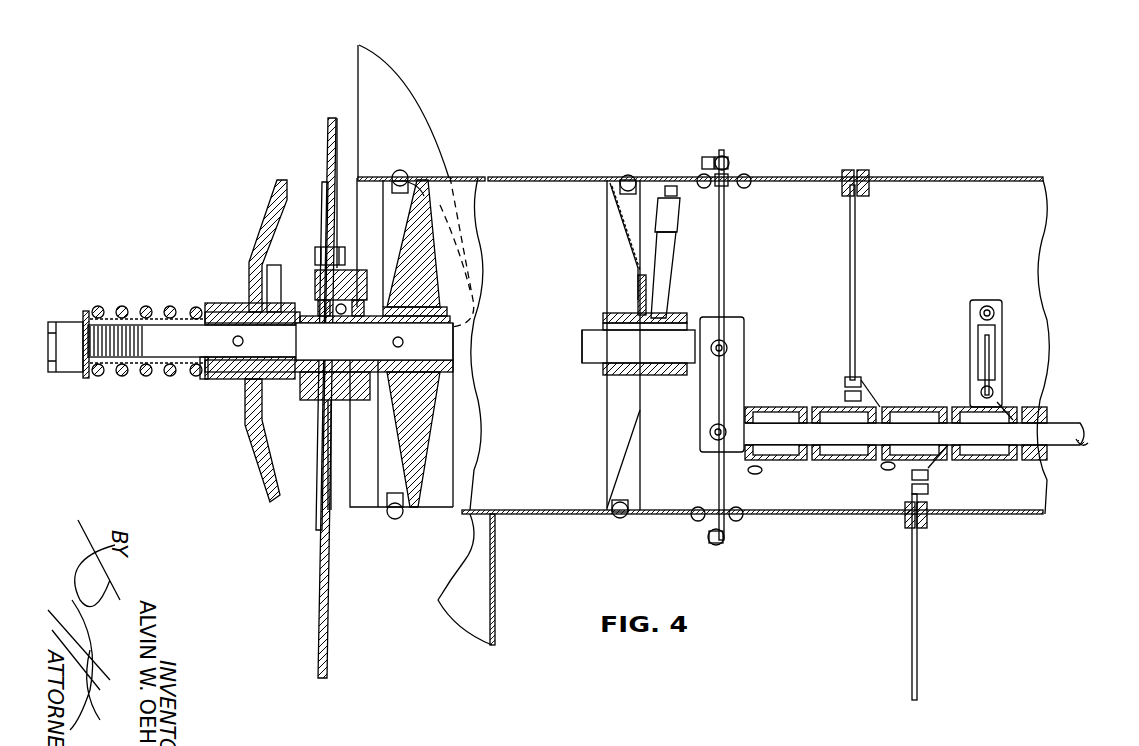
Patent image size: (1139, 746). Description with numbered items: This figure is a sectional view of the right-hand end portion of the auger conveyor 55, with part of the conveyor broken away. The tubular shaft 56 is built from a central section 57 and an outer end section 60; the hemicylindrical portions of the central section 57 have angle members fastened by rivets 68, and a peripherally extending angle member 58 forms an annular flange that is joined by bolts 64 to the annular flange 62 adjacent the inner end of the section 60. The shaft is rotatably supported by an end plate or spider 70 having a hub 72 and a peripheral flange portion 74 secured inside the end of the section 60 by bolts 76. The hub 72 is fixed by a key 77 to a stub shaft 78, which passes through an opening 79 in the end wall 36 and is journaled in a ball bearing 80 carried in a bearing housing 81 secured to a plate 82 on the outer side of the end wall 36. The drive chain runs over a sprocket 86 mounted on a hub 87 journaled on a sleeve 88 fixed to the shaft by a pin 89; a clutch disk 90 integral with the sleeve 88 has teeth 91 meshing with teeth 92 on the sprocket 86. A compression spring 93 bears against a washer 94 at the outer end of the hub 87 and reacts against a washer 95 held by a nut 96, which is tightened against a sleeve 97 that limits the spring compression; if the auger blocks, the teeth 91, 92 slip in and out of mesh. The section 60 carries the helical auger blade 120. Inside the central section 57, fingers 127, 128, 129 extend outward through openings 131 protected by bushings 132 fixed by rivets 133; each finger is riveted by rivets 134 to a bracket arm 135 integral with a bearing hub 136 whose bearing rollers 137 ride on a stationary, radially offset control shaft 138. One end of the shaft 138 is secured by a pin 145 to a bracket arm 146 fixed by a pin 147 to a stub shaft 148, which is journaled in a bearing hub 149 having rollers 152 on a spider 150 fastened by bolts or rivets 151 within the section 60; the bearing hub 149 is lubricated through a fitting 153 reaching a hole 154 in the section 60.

The end wall 36 is at (327, 598).
The auger conveyor 55 is at (328, 91).
The tubular shaft 56 is at (530, 175).
The central section 57 is at (930, 180).
The peripherally extending angle member 58 is at (727, 158).
The outer end section 60 is at (585, 178).
The annular flange 62 is at (718, 156).
The bolt 64 is at (708, 160).
The rivet 68 is at (750, 462).
The end plate or spider 70 is at (430, 448).
The hub 72 is at (466, 300).
The peripheral flange portion 74 is at (382, 500).
The bolt 76 is at (396, 520).
The key 77 is at (468, 328).
The stub shaft 78 is at (438, 372).
The opening 79 is at (332, 444).
The ball bearing 80 is at (348, 364).
The bearing housing 81 is at (340, 402).
The plate 82 is at (316, 510).
The sprocket 86 is at (270, 222).
The hub 87 is at (222, 304).
The sleeve 88 is at (222, 356).
The pin 89 is at (244, 341).
The clutch disk 90 is at (314, 256).
The teeth 91 is at (280, 262).
The teeth 92 is at (262, 420).
The compression spring 93 is at (132, 376).
The washer 94 is at (204, 379).
The washer 95 is at (86, 311).
The nut 96 is at (70, 366).
The sleeve 97 is at (134, 306).
The helical auger blade 120 is at (460, 620).
The finger 127 is at (917, 598).
The finger 128 is at (996, 378).
The finger 129 is at (855, 280).
The opening 131 is at (842, 172).
The bushing 132 is at (864, 176).
The rivet 133 is at (992, 308).
The rivet 134 is at (844, 396).
The bracket arm 135 is at (862, 378).
The bearing hub 136 is at (812, 460).
The bearing roller 137 is at (902, 445).
The supporting or control shaft 138 is at (1078, 436).
The pin 145 is at (712, 440).
The bracket arm 146 is at (738, 388).
The pin 147 is at (724, 342).
The stub shaft 148 is at (586, 362).
The bearing hub 149 is at (610, 314).
The spider 150 is at (620, 230).
The bolt or rivet 151 is at (628, 174).
The roller 152 is at (636, 325).
The fitting 153 is at (662, 258).
The hole 154 is at (666, 181).